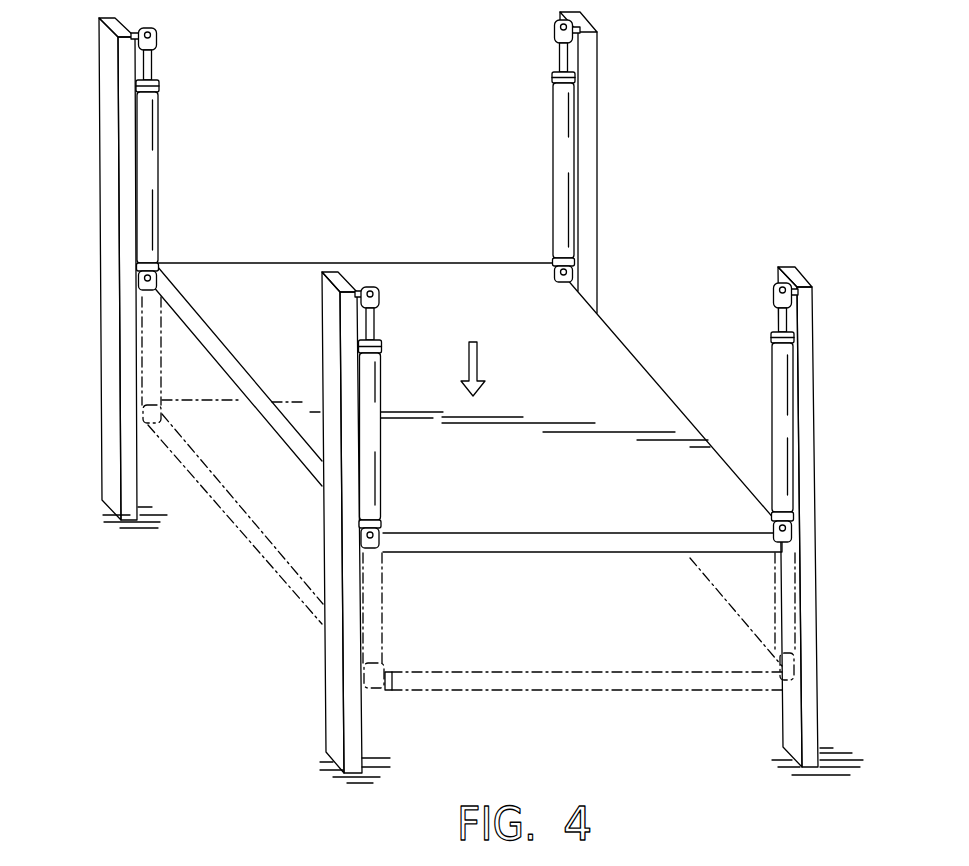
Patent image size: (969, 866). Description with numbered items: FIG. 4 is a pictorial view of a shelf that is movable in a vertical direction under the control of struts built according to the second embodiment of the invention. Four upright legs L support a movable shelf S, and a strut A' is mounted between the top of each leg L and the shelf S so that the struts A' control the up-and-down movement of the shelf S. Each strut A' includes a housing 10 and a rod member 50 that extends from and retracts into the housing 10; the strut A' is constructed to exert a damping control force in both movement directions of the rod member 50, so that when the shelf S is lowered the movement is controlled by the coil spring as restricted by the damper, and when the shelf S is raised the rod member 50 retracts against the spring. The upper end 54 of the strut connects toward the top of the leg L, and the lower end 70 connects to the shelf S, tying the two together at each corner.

The legs L is at (100, 104).
The strut A' is at (464, 313).
The movable shelf S is at (613, 355).
The housing 10 is at (411, 437).
The upper clevis mounting end 54 is at (378, 297).
The rod member 50 is at (374, 328).
The lower clevis mounting end 70 is at (378, 563).